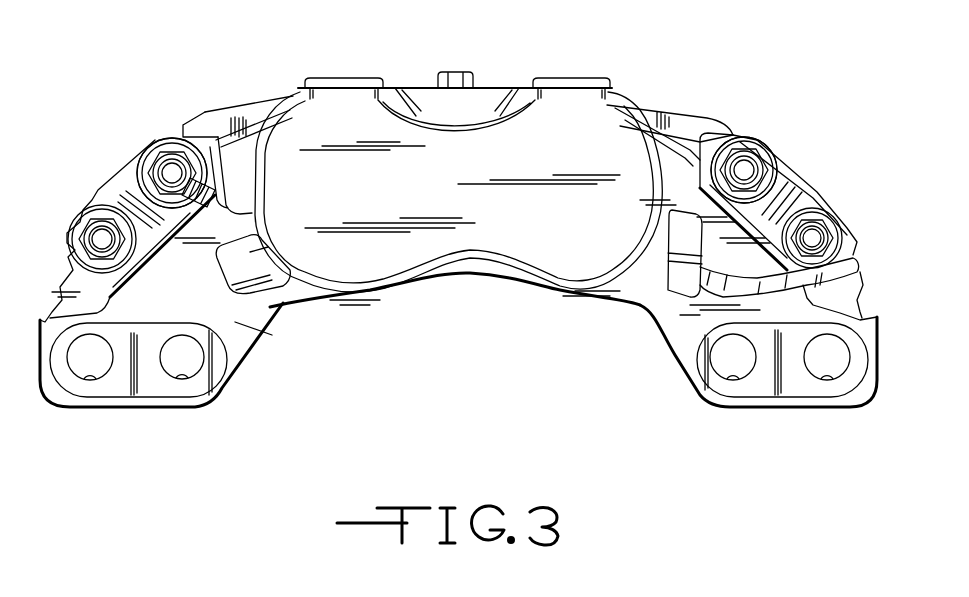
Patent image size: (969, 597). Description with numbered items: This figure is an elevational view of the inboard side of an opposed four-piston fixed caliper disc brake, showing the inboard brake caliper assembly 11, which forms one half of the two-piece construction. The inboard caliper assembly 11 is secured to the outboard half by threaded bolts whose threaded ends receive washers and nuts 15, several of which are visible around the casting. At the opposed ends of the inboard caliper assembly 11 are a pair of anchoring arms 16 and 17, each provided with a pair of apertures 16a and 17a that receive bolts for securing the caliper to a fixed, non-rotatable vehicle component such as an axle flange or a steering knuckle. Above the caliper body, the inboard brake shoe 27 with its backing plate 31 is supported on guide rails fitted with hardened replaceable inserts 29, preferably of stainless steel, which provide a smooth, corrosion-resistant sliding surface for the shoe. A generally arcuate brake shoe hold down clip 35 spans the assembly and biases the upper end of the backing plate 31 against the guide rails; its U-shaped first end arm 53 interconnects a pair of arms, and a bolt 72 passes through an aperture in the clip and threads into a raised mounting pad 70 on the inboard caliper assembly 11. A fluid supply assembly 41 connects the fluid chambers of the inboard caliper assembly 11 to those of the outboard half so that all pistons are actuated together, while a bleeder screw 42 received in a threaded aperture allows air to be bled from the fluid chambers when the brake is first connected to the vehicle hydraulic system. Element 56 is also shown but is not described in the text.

The inboard brake caliper assembly 11 is at (434, 277).
The nuts 15 is at (143, 160).
The anchoring arm 16 is at (143, 390).
The apertures 16a is at (97, 373).
The anchoring arm 17 is at (785, 400).
The apertures 17a is at (723, 385).
The inboard brake shoe 27 is at (688, 103).
The hardened replaceable insert 29 is at (150, 135).
The backing plate 31 is at (220, 123).
The brake shoe hold down clip 35 is at (518, 68).
The fluid supply assembly 41 is at (864, 263).
The bleeder screws 42 is at (252, 213).
The first end arm 53 is at (277, 96).
The retaining strap 56 is at (623, 100).
The raised mounting pad 70 is at (478, 110).
The bolt 72 is at (455, 70).